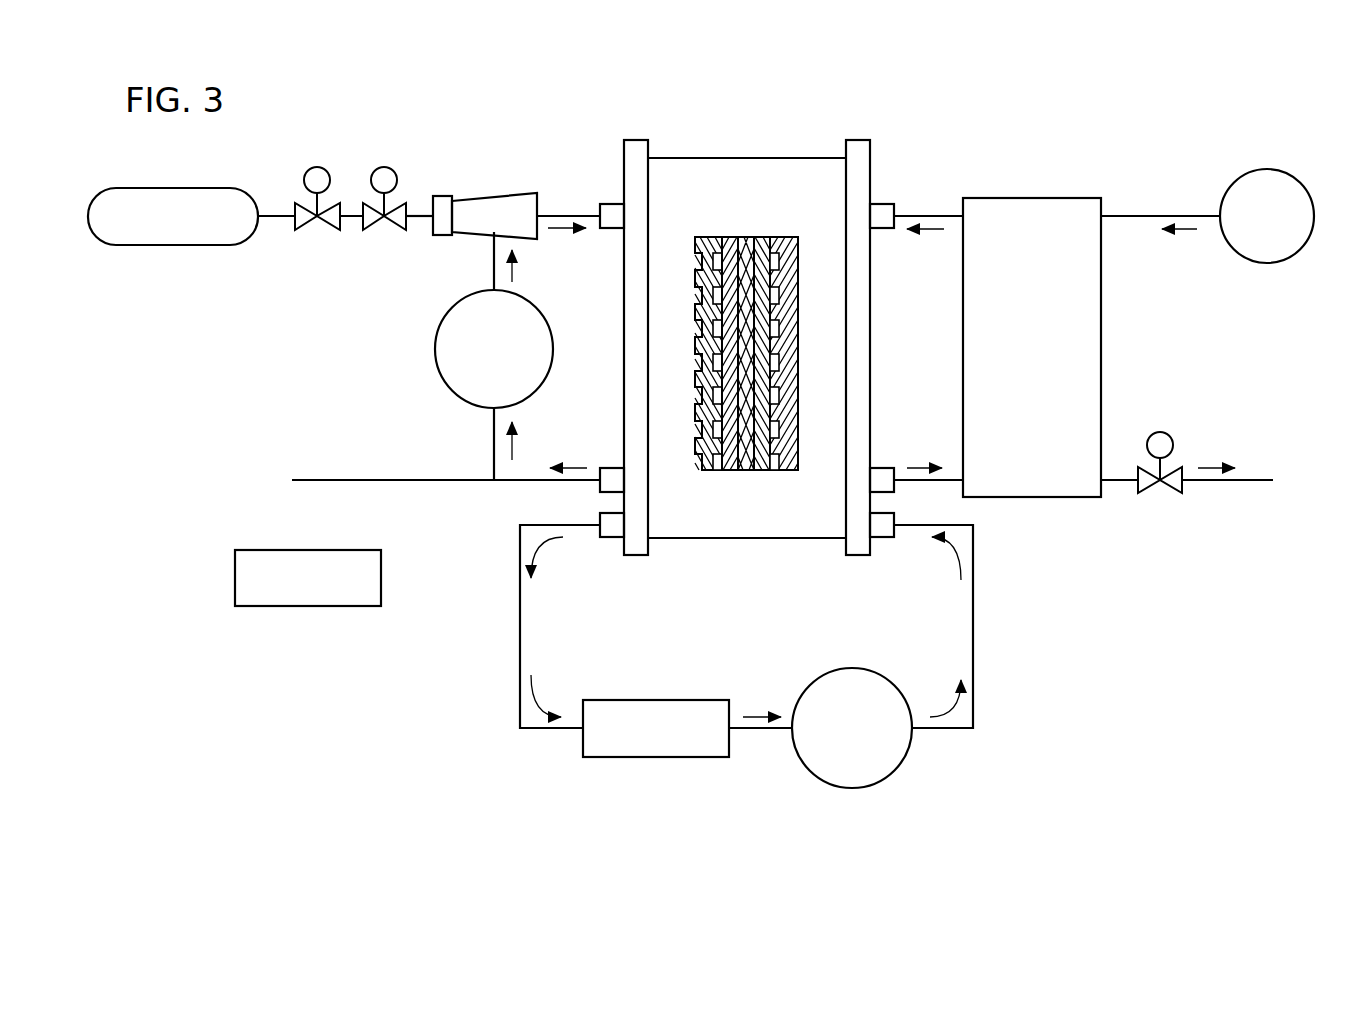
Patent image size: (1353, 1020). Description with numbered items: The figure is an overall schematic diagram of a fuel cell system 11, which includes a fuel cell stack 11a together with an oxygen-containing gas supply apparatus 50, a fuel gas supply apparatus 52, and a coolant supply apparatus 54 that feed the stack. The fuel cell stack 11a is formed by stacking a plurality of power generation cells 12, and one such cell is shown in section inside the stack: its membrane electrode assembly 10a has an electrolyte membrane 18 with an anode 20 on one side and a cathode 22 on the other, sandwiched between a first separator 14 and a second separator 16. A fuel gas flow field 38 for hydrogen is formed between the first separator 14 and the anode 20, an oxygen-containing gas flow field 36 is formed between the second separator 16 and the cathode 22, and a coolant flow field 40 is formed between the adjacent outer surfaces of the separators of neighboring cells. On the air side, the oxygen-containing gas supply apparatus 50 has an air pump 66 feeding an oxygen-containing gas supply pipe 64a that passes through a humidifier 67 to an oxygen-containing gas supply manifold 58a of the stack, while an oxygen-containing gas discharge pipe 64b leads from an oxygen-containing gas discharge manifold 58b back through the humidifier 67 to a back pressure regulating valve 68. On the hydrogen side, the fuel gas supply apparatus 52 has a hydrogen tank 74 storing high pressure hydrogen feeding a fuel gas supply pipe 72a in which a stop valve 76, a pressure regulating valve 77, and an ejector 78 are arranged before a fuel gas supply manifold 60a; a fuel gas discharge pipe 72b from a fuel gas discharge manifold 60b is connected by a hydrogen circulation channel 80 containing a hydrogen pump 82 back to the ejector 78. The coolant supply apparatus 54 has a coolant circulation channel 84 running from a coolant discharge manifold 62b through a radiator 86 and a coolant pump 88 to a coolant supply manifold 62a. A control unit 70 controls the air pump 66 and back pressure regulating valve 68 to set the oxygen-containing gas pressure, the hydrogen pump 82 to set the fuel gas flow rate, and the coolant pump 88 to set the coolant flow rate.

The fuel cell system 11 is at (466, 112).
The fuel cell stack 11a is at (716, 156).
The power generation cell 12 is at (747, 330).
The membrane electrode assembly 10a is at (693, 197).
The first separator 14 is at (692, 292).
The second separator 16 is at (806, 292).
The electrolyte membrane 18 is at (746, 237).
The anode 20 is at (728, 237).
The cathode 22 is at (763, 237).
The oxygen-containing gas flow field 36 is at (776, 373).
The fuel gas flow field 38 is at (712, 296).
The coolant flow field 40 is at (698, 444).
The oxygen-containing gas supply apparatus 50 is at (1218, 158).
The fuel gas supply apparatus 52 is at (268, 170).
The coolant supply apparatus 54 is at (478, 662).
The oxygen-containing gas supply manifold 58a is at (881, 204).
The oxygen-containing gas discharge manifold 58b is at (881, 468).
The fuel gas supply manifold 60a is at (608, 204).
The fuel gas discharge manifold 60b is at (608, 468).
The coolant supply manifold 62a is at (884, 538).
The coolant discharge manifold 62b is at (610, 538).
The oxygen-containing gas supply pipe 64a is at (1166, 215).
The oxygen-containing gas discharge pipe 64b is at (1118, 484).
The air pump 66 is at (1282, 172).
The humidifier 67 is at (1048, 198).
The back pressure regulating valve 68 is at (1154, 432).
The control unit 70 is at (336, 550).
The fuel gas supply pipe 72a is at (412, 212).
The fuel gas discharge pipe 72b is at (430, 484).
The hydrogen tank 74 is at (152, 187).
The stop valve 76 is at (313, 167).
The pressure regulating valve 77 is at (381, 167).
The ejector 78 is at (508, 200).
The hydrogen circulation channel 80 is at (490, 261).
The hydrogen pump 82 is at (448, 386).
The coolant circulation channel 84 is at (518, 630).
The radiator 86 is at (686, 700).
The coolant pump 88 is at (865, 669).